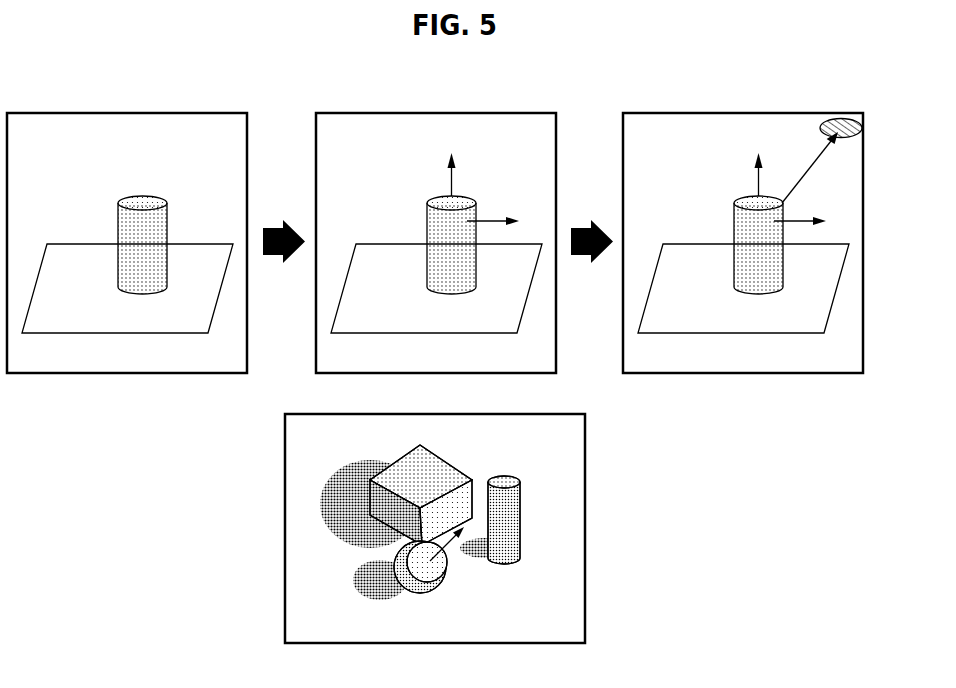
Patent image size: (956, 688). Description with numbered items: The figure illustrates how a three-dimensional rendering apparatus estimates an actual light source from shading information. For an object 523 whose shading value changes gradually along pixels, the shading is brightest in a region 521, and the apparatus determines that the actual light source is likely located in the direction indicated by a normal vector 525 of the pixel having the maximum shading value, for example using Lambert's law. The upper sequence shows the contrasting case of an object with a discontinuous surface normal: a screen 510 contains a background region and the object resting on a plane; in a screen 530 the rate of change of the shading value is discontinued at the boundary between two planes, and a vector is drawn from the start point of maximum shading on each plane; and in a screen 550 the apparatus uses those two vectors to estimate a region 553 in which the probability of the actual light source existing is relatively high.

The screen 510 is at (128, 113).
The screen 530 is at (437, 113).
The screen 550 is at (744, 113).
The region 553 is at (845, 118).
The region 521 is at (428, 595).
The object 523 is at (417, 595).
The normal vector 525 is at (447, 551).